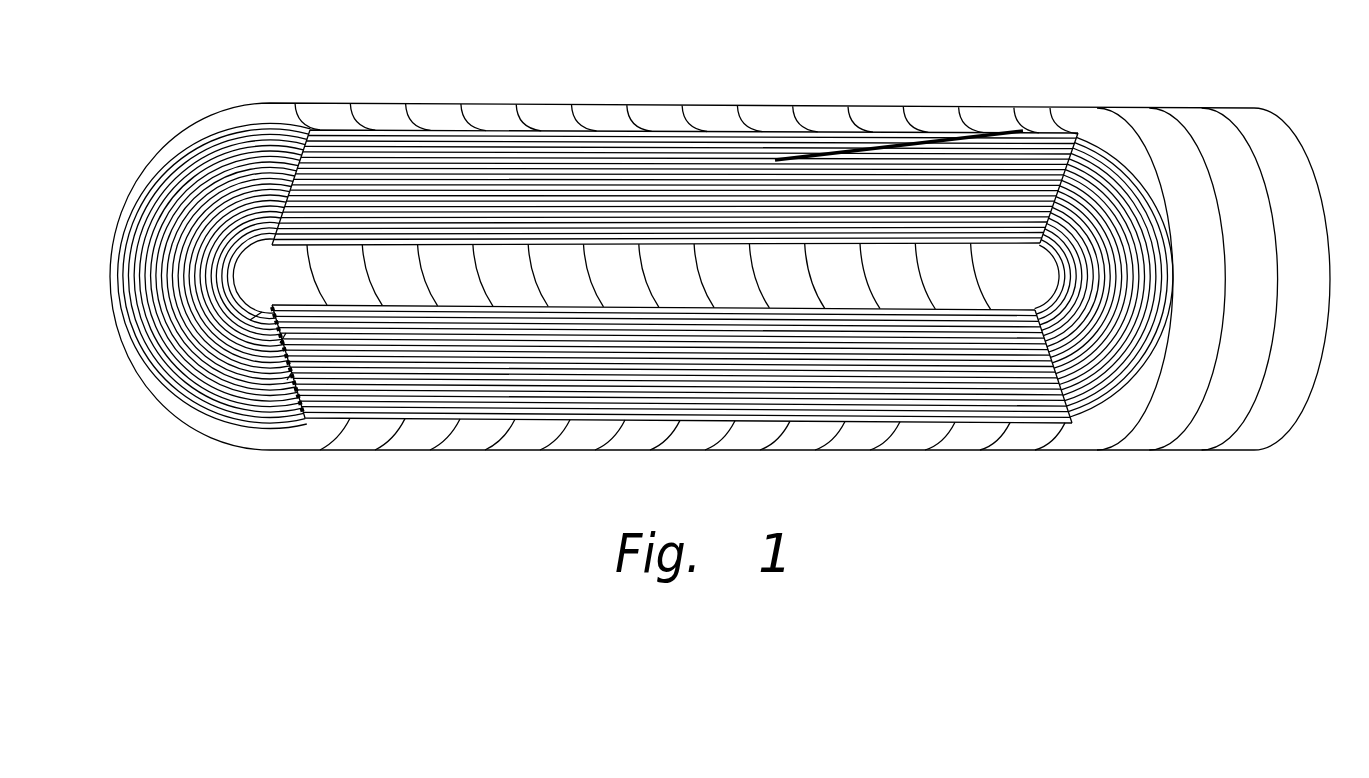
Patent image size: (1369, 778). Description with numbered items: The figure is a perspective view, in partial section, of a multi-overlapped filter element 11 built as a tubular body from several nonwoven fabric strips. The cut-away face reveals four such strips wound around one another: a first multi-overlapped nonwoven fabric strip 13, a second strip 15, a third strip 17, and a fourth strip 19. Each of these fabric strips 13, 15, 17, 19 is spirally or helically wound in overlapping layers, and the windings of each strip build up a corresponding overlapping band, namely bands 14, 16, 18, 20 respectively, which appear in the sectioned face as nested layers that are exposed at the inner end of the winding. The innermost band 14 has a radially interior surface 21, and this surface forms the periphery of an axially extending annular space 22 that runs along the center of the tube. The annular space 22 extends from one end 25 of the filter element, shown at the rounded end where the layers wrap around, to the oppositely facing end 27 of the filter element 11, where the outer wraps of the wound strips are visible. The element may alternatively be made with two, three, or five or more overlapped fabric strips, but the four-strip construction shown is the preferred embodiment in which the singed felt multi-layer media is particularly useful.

The multi-overlapped filter element 11 is at (1075, 50).
The first multi-overlapped nonwoven fabric strip 13 is at (890, 225).
The first overlapping band 14 is at (250, 320).
The second multi-overlapped nonwoven fabric strip 15 is at (773, 202).
The second overlapping band 16 is at (280, 343).
The third multi-overlapped nonwoven fabric strip 17 is at (672, 170).
The third overlapping band 18 is at (287, 380).
The fourth multi-overlapped nonwoven fabric strip 19 is at (508, 135).
The fourth overlapping band 20 is at (298, 412).
The radially interior surface 21 is at (604, 248).
The axially extending annular space 22 is at (716, 286).
The end of the filter element 25 is at (117, 225).
The oppositely facing end of the filter element 27 is at (1316, 378).